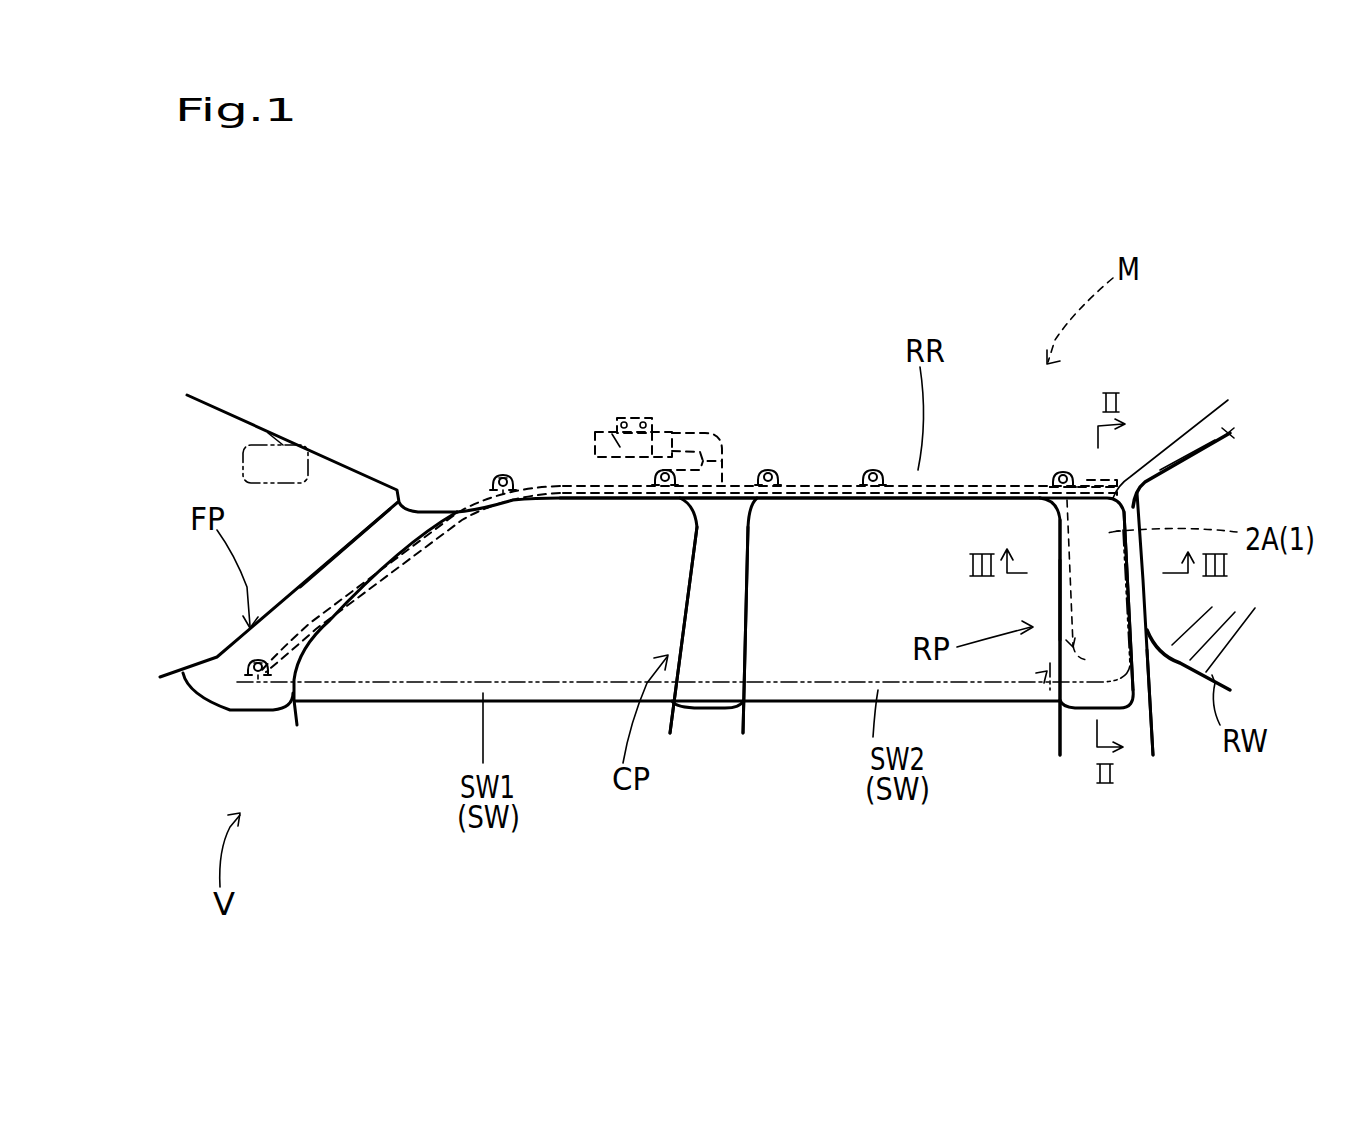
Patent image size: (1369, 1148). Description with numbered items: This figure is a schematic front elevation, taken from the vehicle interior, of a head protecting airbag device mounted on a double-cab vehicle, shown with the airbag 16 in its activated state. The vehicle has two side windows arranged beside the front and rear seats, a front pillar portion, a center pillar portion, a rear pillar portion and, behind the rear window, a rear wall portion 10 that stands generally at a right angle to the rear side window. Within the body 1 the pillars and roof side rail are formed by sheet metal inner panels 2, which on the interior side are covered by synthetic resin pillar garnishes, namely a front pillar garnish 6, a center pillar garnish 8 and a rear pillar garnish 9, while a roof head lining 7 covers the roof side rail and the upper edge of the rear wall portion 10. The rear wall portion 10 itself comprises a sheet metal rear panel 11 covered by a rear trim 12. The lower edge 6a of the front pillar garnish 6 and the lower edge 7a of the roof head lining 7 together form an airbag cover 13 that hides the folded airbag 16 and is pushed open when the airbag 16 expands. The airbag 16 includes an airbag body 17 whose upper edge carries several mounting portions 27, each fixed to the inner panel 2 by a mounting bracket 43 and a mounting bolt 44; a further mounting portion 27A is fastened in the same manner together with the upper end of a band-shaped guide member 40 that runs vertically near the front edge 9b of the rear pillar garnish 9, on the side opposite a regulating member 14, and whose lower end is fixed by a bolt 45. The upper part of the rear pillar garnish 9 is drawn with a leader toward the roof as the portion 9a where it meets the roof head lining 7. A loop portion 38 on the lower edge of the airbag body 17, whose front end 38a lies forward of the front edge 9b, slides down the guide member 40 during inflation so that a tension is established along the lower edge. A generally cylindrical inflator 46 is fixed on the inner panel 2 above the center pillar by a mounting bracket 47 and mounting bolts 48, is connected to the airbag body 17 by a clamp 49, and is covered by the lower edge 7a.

The body 1 is at (697, 542).
The inner panel 2 is at (803, 480).
The front pillar garnish 6 is at (307, 587).
The lower edge of front pillar garnish 6a is at (333, 603).
The roof head lining 7 is at (552, 495).
The lower edge of roof head lining 7a is at (608, 500).
The center pillar garnish 8 is at (737, 602).
The rear pillar garnish 9 is at (1113, 613).
The rear pillar upper portion 9a is at (1189, 440).
The front edge of rear pillar garnish 9b is at (1060, 590).
The rear wall portion 10 is at (1183, 720).
The rear panel 11 is at (1204, 450).
The rear trim 12 is at (1228, 433).
The airbag cover 13 is at (689, 581).
The regulating member 14 is at (1113, 480).
The airbag 16 is at (560, 500).
The airbag body 17 is at (683, 654).
The mounting portion 27 is at (497, 477).
The mounting portion 27A is at (1062, 473).
The loop portion 38 is at (1050, 663).
The front end of loop portion 38a is at (1047, 672).
The guide member 40 is at (1053, 547).
The mounting bracket 43 is at (503, 495).
The mounting bolt 44 is at (507, 513).
The bolt 45 is at (1096, 646).
The inflator 46 is at (662, 433).
The mounting bracket 47 is at (610, 432).
The mounting bolts 48 is at (643, 423).
The clamp 49 is at (722, 480).